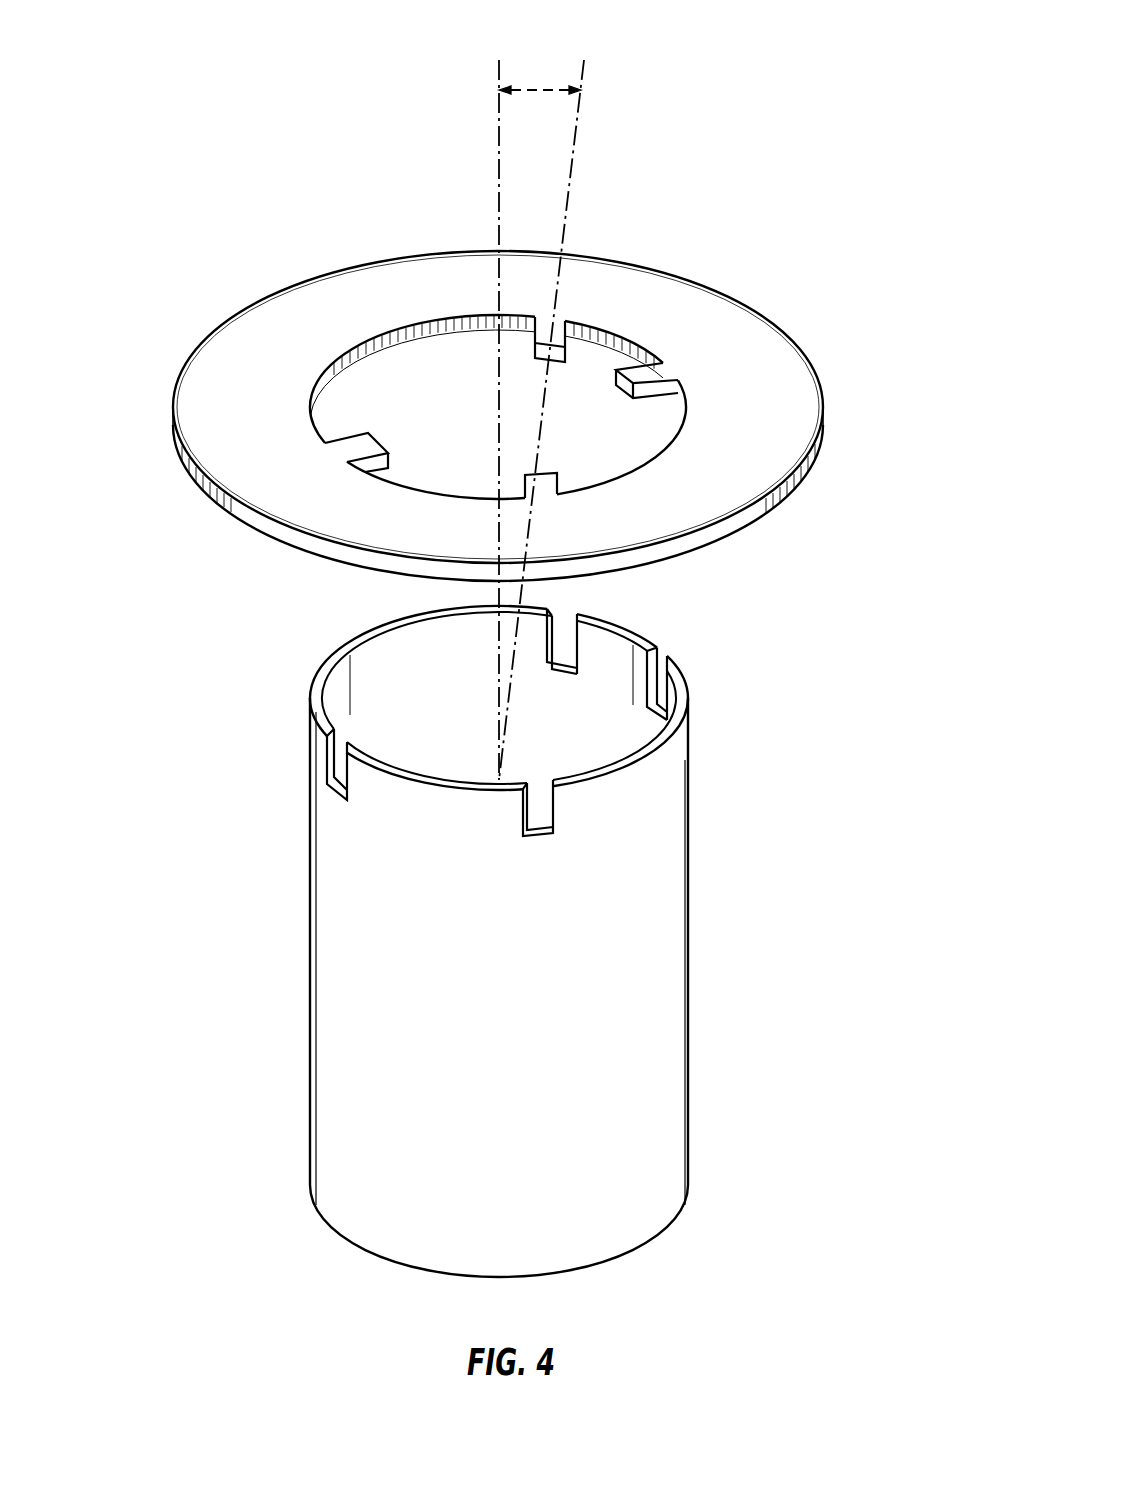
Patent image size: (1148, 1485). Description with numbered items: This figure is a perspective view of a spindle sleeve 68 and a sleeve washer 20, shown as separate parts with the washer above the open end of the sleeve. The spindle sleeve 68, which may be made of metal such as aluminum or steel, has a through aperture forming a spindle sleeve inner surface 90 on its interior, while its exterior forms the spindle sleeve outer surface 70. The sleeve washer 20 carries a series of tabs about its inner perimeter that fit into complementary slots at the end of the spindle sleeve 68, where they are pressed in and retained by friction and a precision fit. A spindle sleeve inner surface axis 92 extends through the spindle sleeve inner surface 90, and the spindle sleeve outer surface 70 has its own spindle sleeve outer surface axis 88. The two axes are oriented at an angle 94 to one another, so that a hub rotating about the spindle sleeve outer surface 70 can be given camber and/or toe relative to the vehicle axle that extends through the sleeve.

The sleeve washer 20 is at (755, 338).
The spindle sleeve 68 is at (537, 941).
The spindle sleeve outer surface 70 is at (652, 1083).
The spindle sleeve inner surface 90 is at (352, 703).
The spindle sleeve inner surface axis 92 is at (497, 163).
The spindle sleeve outer surface axis 88 is at (571, 188).
The angle 94 is at (540, 90).